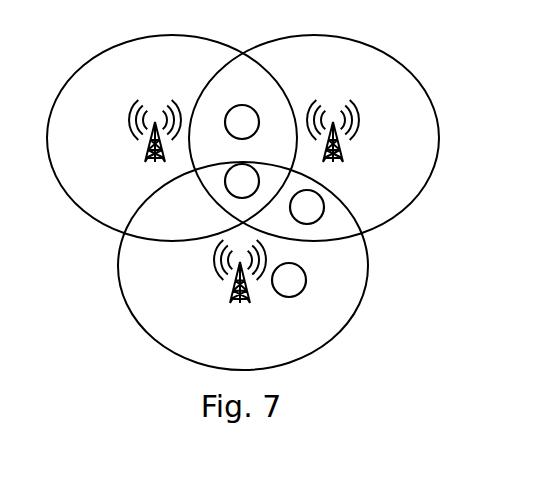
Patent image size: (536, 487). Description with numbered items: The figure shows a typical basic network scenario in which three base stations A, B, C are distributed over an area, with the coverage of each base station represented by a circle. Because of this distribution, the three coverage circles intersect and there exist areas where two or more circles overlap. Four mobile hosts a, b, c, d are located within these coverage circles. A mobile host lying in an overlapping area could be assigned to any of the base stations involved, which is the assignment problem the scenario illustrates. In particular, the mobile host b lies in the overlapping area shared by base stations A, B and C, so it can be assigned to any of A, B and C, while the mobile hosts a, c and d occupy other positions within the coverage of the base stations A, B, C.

The base station A is at (155, 123).
The base station B is at (333, 122).
The base station C is at (240, 283).
The mobile host a is at (242, 132).
The mobile host b is at (242, 190).
The mobile host c is at (307, 217).
The mobile host d is at (289, 294).